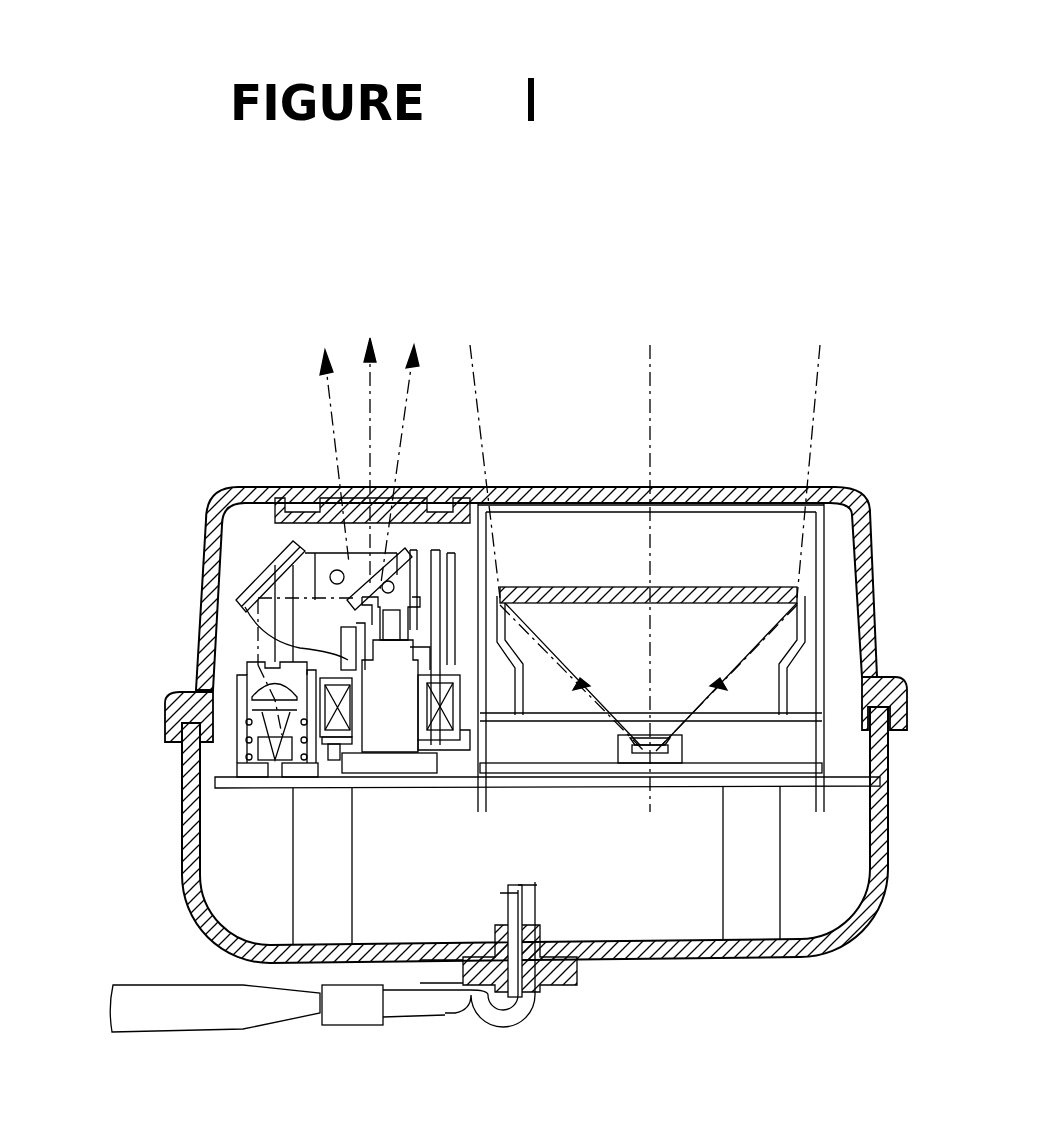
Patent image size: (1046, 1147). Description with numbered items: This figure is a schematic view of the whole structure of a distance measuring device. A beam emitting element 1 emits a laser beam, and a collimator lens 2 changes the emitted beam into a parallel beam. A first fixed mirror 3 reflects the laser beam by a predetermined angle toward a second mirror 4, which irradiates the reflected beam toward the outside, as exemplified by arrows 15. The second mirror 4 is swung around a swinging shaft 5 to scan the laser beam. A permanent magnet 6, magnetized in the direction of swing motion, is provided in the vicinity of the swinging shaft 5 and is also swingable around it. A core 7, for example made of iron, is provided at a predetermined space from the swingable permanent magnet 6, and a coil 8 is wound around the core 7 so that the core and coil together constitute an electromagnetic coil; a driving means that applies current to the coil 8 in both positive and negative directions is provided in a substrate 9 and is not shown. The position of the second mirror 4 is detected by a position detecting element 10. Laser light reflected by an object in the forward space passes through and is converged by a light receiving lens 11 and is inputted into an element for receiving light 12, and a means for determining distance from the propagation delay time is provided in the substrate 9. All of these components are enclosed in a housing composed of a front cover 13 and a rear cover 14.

The beam emitting element 1 is at (268, 747).
The collimator lens 2 is at (246, 692).
The first fixed mirror 3 is at (258, 580).
The second mirror 4 is at (353, 603).
The swinging shaft 5 is at (400, 600).
The permanent magnet 6 is at (402, 612).
The core 7 is at (378, 745).
The coil 8 is at (335, 720).
The substrate 9 is at (536, 790).
The position detecting element 10 is at (360, 640).
The light receiving lens 11 is at (730, 585).
The element for receiving light 12 is at (683, 747).
The front cover 13 is at (862, 508).
The rear cover 14 is at (855, 935).
The arrows 15 is at (370, 345).